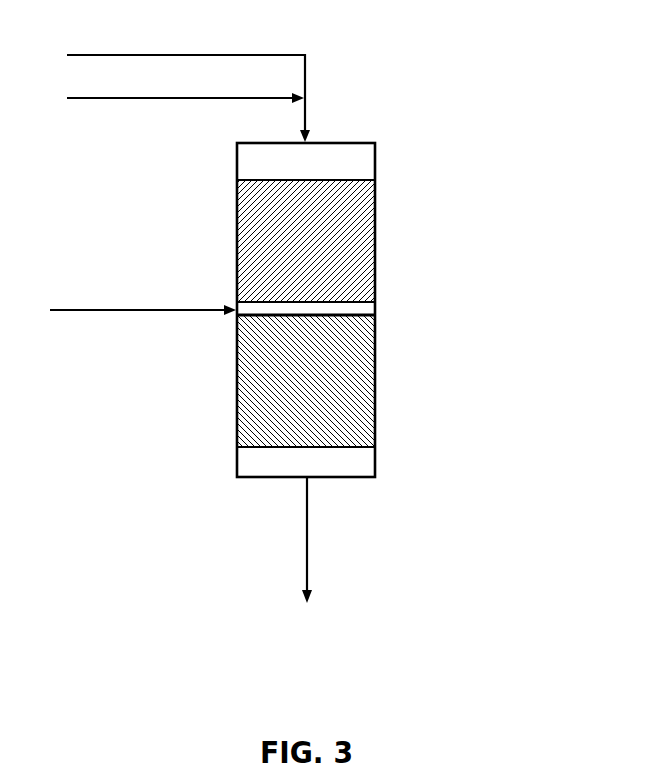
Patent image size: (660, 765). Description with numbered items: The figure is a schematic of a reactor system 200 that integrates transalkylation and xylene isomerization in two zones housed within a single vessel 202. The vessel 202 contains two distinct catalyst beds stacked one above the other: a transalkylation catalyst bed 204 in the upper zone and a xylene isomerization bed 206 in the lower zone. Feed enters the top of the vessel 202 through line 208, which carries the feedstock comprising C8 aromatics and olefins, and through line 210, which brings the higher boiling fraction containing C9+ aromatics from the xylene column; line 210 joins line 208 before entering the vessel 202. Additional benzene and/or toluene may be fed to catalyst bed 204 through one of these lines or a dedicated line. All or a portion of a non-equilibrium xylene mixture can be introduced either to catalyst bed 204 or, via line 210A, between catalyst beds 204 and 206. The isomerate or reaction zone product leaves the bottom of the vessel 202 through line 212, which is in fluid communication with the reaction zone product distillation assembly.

The reactor system 200 is at (526, 576).
The reactor vessel 202 is at (235, 362).
The transalkylation catalyst bed 204 is at (267, 225).
The xylene isomerization bed 206 is at (352, 375).
The feed line 208 is at (202, 55).
The feed line for higher boiling fraction 210 is at (138, 98).
The intermediate feed line 210A is at (117, 307).
The product withdrawal line 212 is at (305, 507).